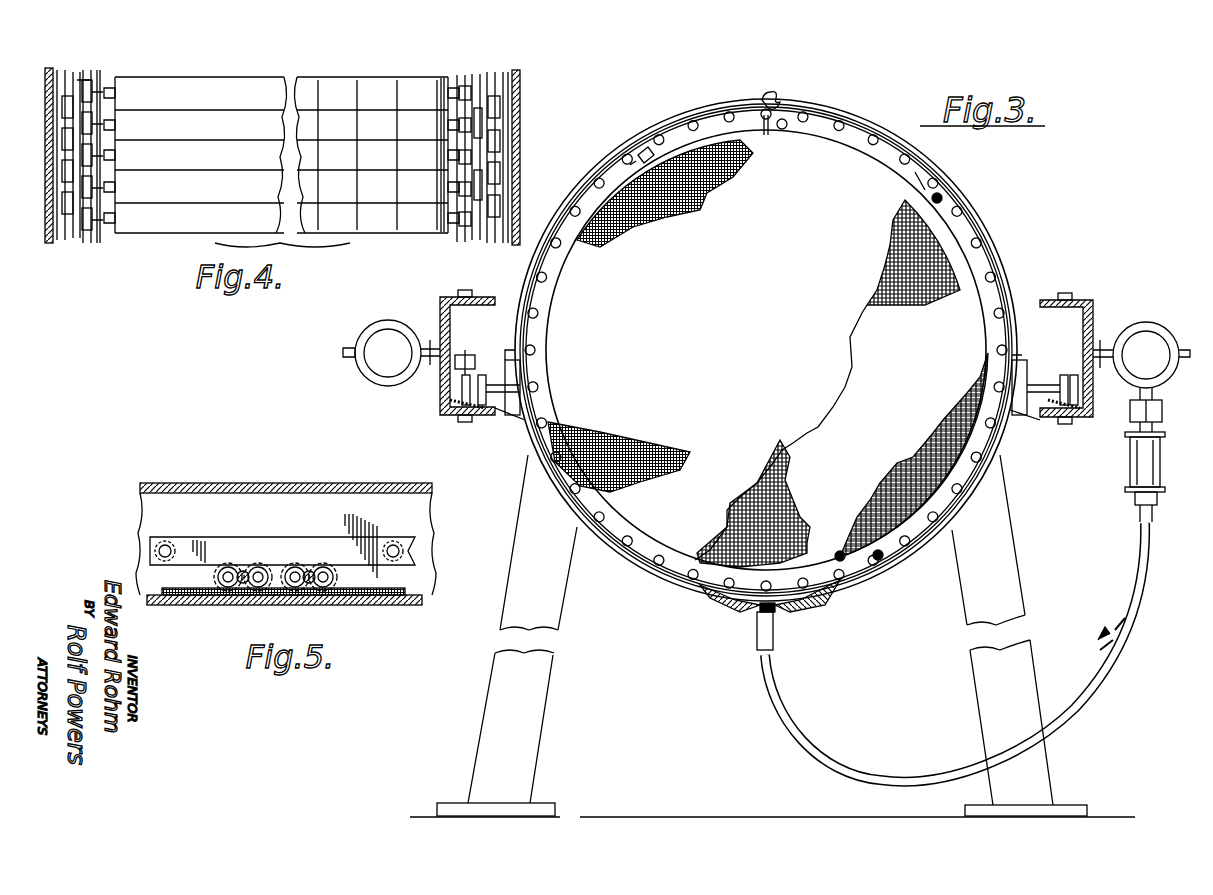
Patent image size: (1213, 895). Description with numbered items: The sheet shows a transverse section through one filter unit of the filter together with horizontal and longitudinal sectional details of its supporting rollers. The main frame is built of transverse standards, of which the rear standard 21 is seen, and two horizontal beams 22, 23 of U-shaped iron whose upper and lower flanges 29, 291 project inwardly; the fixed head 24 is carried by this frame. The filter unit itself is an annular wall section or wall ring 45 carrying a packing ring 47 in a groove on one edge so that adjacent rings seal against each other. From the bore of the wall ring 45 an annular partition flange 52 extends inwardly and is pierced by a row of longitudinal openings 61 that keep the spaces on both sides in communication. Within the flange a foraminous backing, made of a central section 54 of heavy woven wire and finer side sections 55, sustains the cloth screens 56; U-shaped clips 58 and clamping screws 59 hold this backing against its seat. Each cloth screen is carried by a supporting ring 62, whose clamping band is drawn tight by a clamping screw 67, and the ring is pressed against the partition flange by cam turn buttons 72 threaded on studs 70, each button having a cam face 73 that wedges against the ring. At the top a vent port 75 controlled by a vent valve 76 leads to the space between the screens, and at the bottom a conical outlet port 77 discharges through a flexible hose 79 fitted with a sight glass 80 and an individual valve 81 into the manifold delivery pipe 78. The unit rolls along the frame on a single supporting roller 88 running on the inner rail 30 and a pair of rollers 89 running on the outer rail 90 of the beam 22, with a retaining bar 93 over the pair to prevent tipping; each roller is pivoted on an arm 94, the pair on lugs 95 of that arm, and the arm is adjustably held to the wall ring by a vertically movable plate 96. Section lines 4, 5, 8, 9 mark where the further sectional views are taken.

In FIG. 3, the transverse standard 21 is at (540, 690).
In FIG. 4, the horizontal beam 22 is at (60, 72).
In FIG. 5, the horizontal beam 22 is at (145, 490).
In FIG. 3, the horizontal beam 22 is at (440, 300).
In FIG. 4, the horizontal beam 23 is at (518, 72).
In FIG. 3, the horizontal beam 23 is at (1090, 300).
In FIG. 3, the fixed head 24 is at (668, 135).
In FIG. 5, the upper flange 29 is at (322, 483).
In FIG. 3, the upper flange 29 is at (1050, 300).
In FIG. 4, the inner rail 30 is at (100, 72).
In FIG. 5, the inner rail 30 is at (418, 605).
In FIG. 4, the wall ring 45 is at (281, 155).
In FIG. 3, the packing ring 47 is at (908, 155).
In FIG. 3, the annular partition flange 52 is at (858, 135).
In FIG. 3, the central section of foraminous backing 54 is at (897, 463).
In FIG. 3, the side section of foraminous backing 55 is at (792, 448).
In FIG. 3, the cloth screen 56 is at (696, 270).
In FIG. 3, the U-shaped clip 58 is at (892, 222).
In FIG. 3, the clamping screw 59 is at (950, 218).
In FIG. 3, the longitudinal opening 61 is at (865, 150).
In FIG. 3, the supporting ring 62 is at (640, 545).
In FIG. 3, the clamping screw 67 is at (635, 150).
In FIG. 3, the stud 70 is at (882, 562).
In FIG. 3, the cam turn button 72 is at (590, 240).
In FIG. 3, the cam face 73 is at (386, 334).
In FIG. 3, the vent port 75 is at (790, 100).
In FIG. 3, the vent valve 76 is at (768, 92).
In FIG. 3, the outlet port 77 is at (735, 605).
In FIG. 3, the manifold liquid delivery pipe 78 is at (1146, 330).
In FIG. 3, the flexible hose 79 is at (945, 772).
In FIG. 3, the sight glass 80 is at (1135, 485).
In FIG. 3, the individual valve 81 is at (1162, 408).
In FIG. 4, the single supporting roller 88 is at (80, 238).
In FIG. 3, the single supporting roller 88 is at (482, 375).
In FIG. 4, the supporting roller 89 is at (62, 138).
In FIG. 5, the supporting roller 89 is at (318, 585).
In FIG. 3, the supporting roller 89 is at (462, 392).
In FIG. 4, the outer rail 90 is at (62, 240).
In FIG. 5, the retaining bar 93 is at (188, 545).
In FIG. 3, the retaining bar 93 is at (465, 355).
In FIG. 4, the arm 94 is at (100, 102).
In FIG. 5, the arm 94 is at (244, 572).
In FIG. 4, the lug 95 is at (85, 72).
In FIG. 5, the lug 95 is at (310, 570).
In FIG. 3, the vertically movable plate 96 is at (520, 385).
In FIG. 5, the lower flange 291 is at (175, 603).
In FIG. 3, the lower flange 291 is at (1045, 417).
In FIG. 3, the section line 4 is at (1110, 430).
In FIG. 3, the section line 5 is at (480, 455).
In FIG. 3, the section line 8 is at (850, 310).
In FIG. 3, the section line 9 is at (1055, 223).